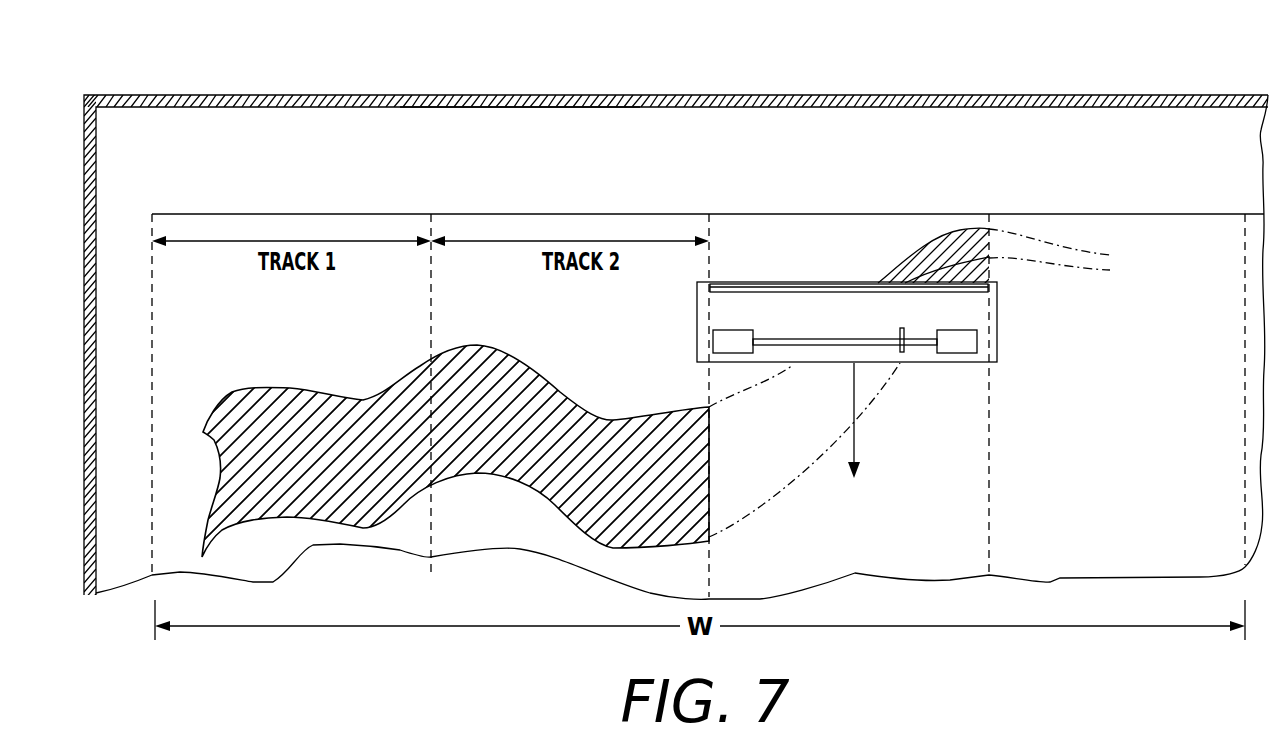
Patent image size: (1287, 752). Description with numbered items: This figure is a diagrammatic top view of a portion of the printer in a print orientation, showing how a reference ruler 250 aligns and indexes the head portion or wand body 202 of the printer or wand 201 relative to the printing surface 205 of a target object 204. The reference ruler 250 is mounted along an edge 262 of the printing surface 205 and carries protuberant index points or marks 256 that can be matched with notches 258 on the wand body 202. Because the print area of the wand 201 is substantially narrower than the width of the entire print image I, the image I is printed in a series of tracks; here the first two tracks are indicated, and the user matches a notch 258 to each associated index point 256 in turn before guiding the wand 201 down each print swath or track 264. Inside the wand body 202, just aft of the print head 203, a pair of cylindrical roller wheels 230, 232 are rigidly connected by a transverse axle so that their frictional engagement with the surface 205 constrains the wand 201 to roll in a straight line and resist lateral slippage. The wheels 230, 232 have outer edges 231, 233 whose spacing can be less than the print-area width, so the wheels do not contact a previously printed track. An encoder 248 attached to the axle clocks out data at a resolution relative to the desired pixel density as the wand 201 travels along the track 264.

The wand 201 is at (858, 310).
The wand body 202 is at (813, 322).
The print head 203 is at (849, 225).
The target object 204 is at (675, 320).
The surface 205 is at (664, 614).
The wheel 230 is at (827, 386).
The outer edge 231 is at (679, 340).
The wheel 232 is at (894, 383).
The outer edge 233 is at (992, 332).
The encoder 248 is at (923, 394).
The reference ruler 250 is at (708, 186).
The index points 256 is at (684, 378).
The notches 258 is at (910, 222).
The edge 262 is at (520, 78).
The track 264 is at (855, 438).
The print image I is at (265, 403).